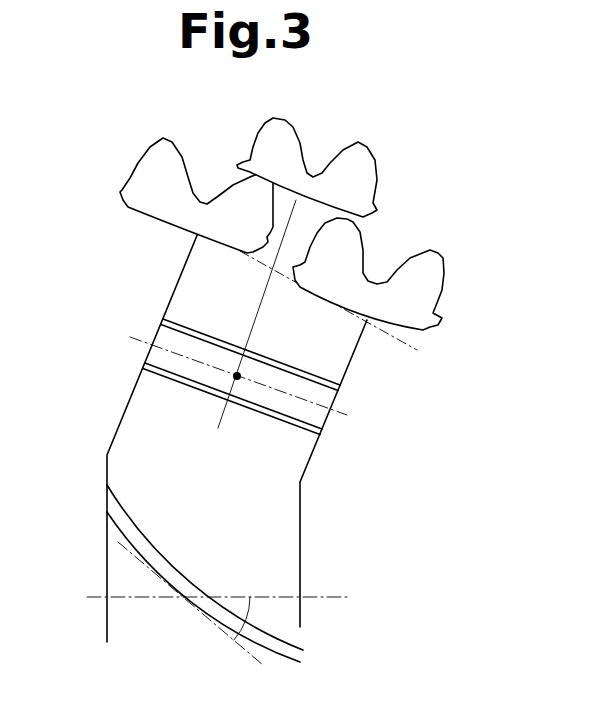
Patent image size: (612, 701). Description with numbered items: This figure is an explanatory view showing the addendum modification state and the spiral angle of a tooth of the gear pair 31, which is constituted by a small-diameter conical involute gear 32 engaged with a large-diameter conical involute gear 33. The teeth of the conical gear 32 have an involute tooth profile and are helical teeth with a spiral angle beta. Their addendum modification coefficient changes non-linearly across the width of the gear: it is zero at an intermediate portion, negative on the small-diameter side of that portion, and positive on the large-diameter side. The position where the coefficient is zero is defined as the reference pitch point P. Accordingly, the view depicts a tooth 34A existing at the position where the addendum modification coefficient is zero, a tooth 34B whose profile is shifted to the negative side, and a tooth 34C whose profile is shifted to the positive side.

The gear pair 31 is at (87, 481).
The small-diameter conical involute gear 32 is at (178, 268).
The large-diameter conical involute gear 33 is at (300, 532).
The tooth 34A is at (282, 121).
The tooth 34B is at (431, 259).
The tooth 34C is at (178, 122).
The reference pitch point P is at (239, 380).